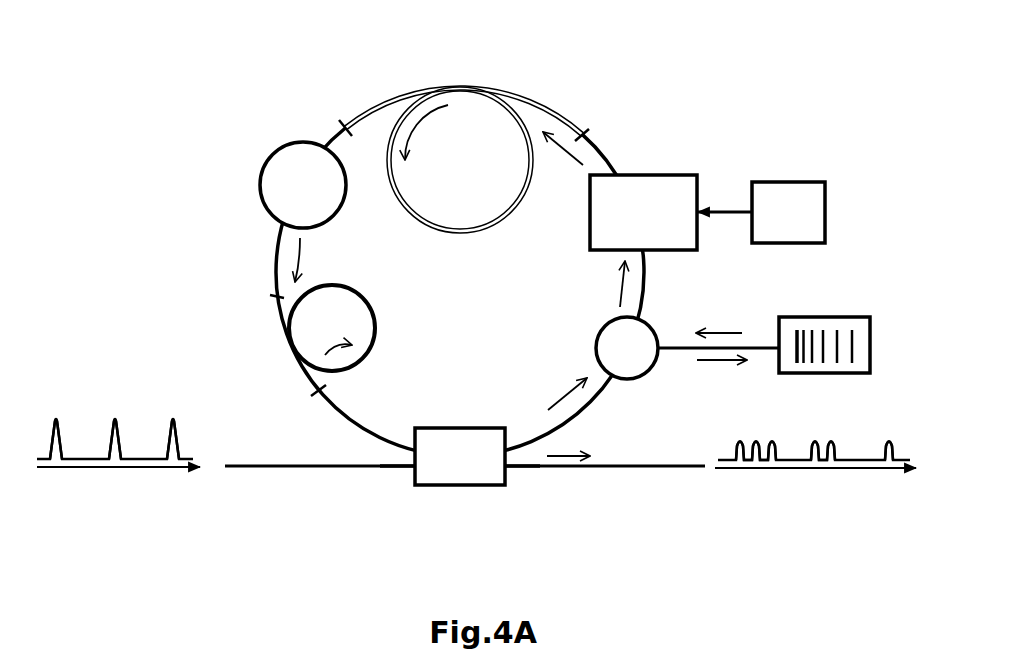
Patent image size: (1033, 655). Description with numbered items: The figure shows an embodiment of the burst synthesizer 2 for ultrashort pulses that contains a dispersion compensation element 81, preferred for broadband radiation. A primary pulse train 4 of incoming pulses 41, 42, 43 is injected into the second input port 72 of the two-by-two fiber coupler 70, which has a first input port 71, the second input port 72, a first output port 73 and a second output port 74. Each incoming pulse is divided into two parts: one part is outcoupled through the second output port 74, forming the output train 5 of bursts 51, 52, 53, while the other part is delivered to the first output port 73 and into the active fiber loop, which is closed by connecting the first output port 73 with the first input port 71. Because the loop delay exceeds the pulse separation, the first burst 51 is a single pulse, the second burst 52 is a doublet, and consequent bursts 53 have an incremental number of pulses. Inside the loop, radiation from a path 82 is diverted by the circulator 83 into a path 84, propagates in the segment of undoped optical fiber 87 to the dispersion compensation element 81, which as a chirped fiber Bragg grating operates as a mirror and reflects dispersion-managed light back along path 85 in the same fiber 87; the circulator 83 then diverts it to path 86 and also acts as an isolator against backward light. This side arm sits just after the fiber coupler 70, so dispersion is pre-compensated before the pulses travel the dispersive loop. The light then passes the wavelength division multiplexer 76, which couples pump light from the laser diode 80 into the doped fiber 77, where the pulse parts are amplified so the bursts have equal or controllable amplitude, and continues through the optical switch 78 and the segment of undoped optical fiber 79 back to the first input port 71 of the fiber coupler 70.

The burst synthesizer 2 is at (137, 90).
The primary pulse train 4 is at (117, 472).
The output train of bursts 5 is at (817, 481).
The first incoming pulse 41 is at (173, 428).
The second incoming pulse 42 is at (115, 428).
The third incoming pulse 43 is at (56, 428).
The first burst 51 is at (889, 437).
The second burst 52 is at (823, 437).
The third burst 53 is at (756, 437).
The fiber coupler 70 is at (445, 471).
The first input port 71 is at (395, 442).
The second input port 72 is at (390, 470).
The first output port 73 is at (527, 440).
The second output port 74 is at (527, 470).
The wavelength division multiplexer 76 is at (628, 225).
The doped fiber 77 is at (502, 95).
The optical switch 78 is at (288, 199).
The segment of undoped optical fiber 79 is at (373, 317).
The laser diode 80 is at (773, 224).
The dispersion compensation element 81 is at (853, 317).
The path 82 is at (567, 386).
The circulator 83 is at (615, 359).
The path 84 is at (722, 372).
The path 85 is at (719, 321).
The path 86 is at (611, 284).
The segment of undoped optical fiber 87 is at (752, 347).